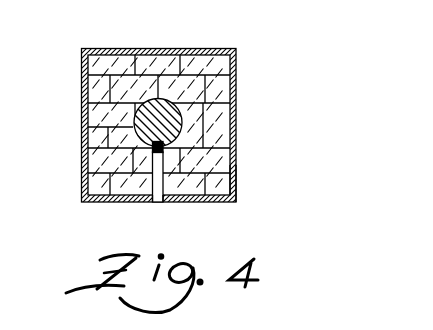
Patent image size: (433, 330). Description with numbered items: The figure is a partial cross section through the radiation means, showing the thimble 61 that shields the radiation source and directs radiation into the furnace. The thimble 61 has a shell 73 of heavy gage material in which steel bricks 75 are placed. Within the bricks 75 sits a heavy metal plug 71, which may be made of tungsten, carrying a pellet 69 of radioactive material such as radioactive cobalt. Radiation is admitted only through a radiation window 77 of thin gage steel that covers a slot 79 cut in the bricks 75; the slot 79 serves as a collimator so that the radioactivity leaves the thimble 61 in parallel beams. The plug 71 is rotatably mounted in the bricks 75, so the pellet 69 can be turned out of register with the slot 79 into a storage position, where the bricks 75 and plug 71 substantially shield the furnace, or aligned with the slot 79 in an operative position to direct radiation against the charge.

The thimble 61 is at (236, 82).
The pellet 69 is at (150, 139).
The heavy metal plug 71 is at (182, 119).
The shell 73 is at (236, 178).
The steel bricks 75 is at (103, 68).
The radiation window 77 is at (158, 188).
The slot 79 is at (164, 196).